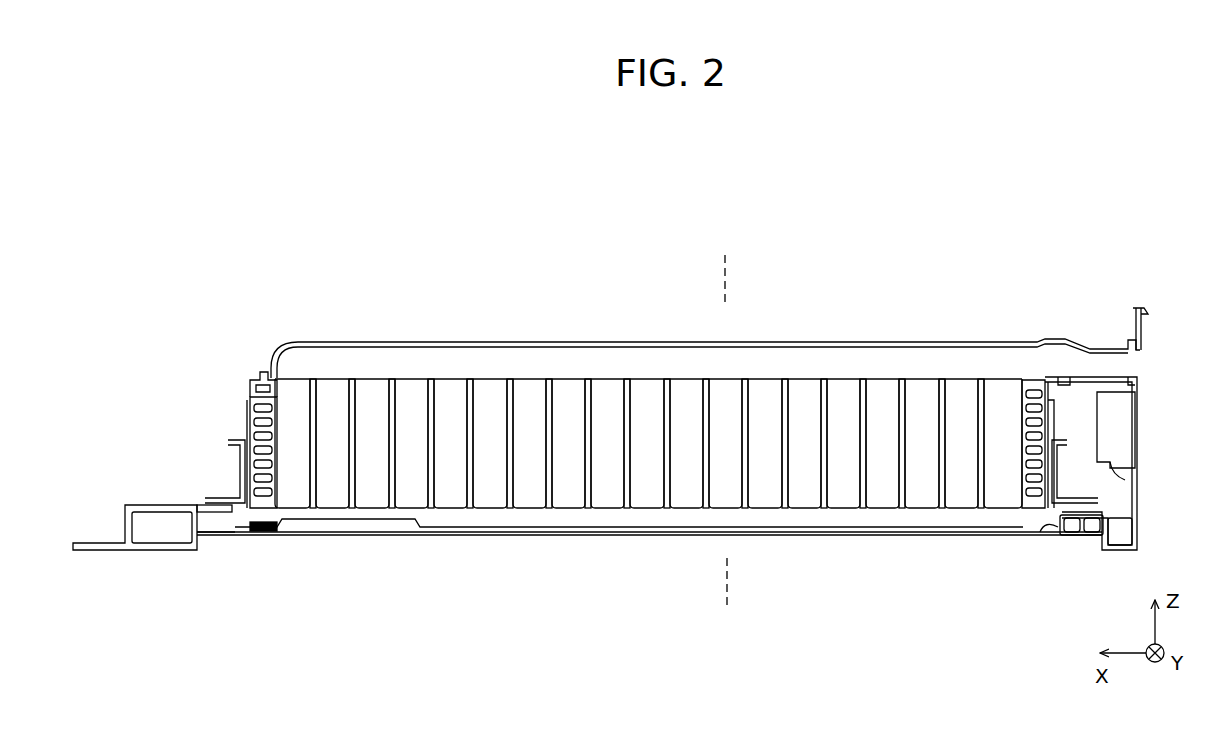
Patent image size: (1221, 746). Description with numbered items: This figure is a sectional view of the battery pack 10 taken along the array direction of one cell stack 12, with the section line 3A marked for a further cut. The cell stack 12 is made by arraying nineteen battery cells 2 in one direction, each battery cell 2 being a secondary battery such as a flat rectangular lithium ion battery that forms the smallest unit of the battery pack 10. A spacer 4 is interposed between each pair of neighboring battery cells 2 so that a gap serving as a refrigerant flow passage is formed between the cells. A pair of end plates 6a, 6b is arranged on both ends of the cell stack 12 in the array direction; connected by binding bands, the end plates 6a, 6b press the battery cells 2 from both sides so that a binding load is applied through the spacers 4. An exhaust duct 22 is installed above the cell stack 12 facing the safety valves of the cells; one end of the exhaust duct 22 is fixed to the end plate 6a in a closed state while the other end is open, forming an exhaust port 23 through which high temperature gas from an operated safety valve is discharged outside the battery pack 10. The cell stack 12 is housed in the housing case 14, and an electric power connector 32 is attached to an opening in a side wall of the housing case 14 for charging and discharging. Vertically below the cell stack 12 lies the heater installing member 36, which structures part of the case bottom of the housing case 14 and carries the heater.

The battery pack 10 is at (1016, 214).
The battery cell 2 is at (528, 395).
The spacer 4 is at (428, 438).
The end plate 6a is at (250, 407).
The end plate 6b is at (1026, 378).
The cell stack 12 is at (846, 368).
The housing case 14 is at (1143, 476).
The exhaust duct 22 is at (588, 343).
The exhaust port 23 is at (1143, 364).
The electric power connector 32 is at (1125, 480).
The heater installing member 36 is at (553, 537).
The section line 3A is at (692, 265).